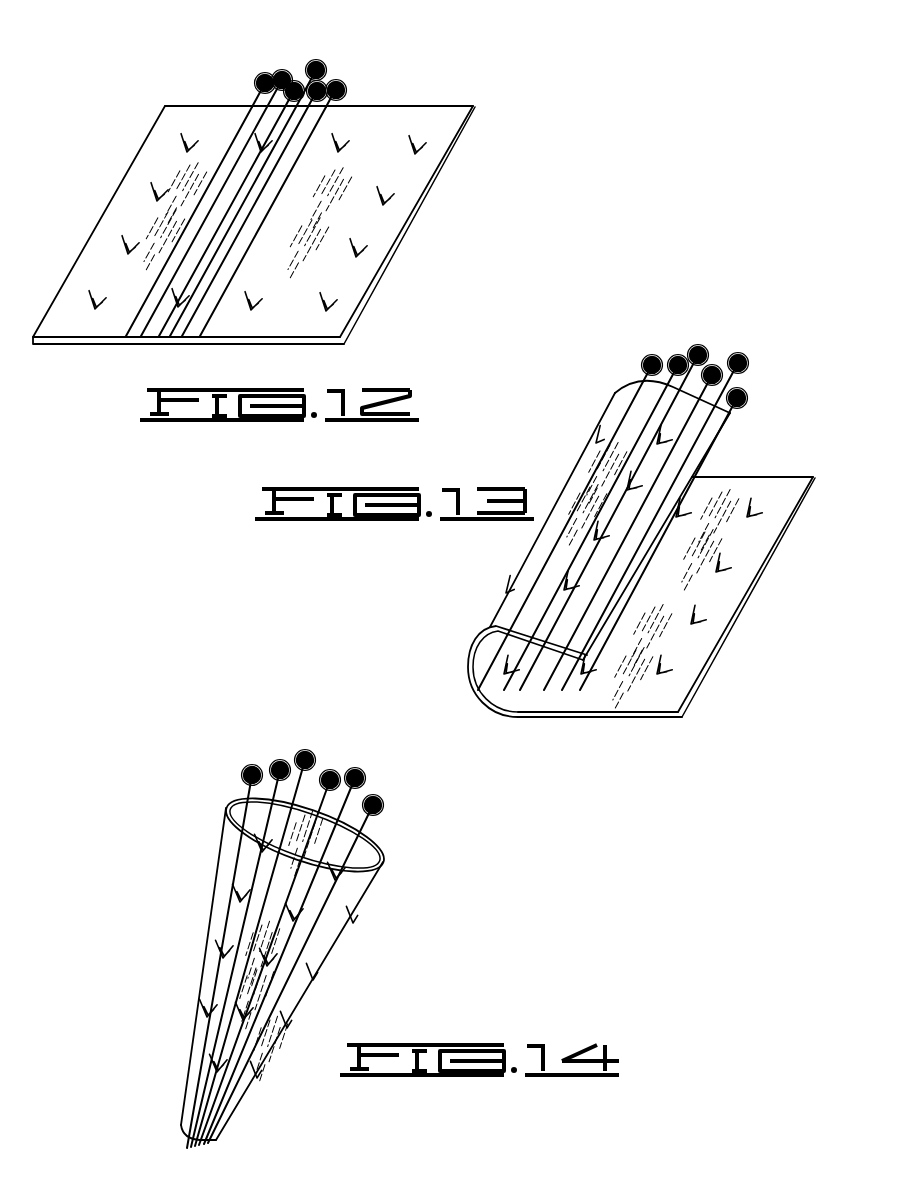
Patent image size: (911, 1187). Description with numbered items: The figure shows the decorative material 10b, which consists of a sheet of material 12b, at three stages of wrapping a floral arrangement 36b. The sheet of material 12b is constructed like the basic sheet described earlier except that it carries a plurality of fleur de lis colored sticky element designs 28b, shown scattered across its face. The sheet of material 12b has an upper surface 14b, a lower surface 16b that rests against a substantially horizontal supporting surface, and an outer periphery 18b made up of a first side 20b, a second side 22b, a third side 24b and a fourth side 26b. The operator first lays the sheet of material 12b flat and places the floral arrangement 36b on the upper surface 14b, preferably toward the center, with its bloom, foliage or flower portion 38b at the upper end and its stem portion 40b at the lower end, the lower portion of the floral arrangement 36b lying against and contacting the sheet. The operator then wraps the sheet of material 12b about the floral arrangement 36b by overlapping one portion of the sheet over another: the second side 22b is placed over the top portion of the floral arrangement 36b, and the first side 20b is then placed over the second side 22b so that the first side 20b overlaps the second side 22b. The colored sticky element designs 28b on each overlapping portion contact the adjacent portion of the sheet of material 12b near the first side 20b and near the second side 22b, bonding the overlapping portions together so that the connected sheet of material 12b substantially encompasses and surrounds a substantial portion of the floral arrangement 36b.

In FIG. 12, the decorative material 10b is at (224, 72).
In FIG. 13, the decorative material 10b is at (620, 360).
In FIG. 14, the decorative material 10b is at (242, 745).
In FIG. 12, the sheet of material 12b is at (201, 101).
In FIG. 13, the sheet of material 12b is at (764, 472).
In FIG. 14, the sheet of material 12b is at (392, 868).
In FIG. 12, the upper surface 14b is at (421, 168).
In FIG. 13, the upper surface 14b is at (770, 530).
In FIG. 14, the upper surface 14b is at (340, 848).
In FIG. 13, the lower surface 16b is at (530, 568).
In FIG. 14, the lower surface 16b is at (237, 875).
In FIG. 12, the outer periphery 18b is at (385, 272).
In FIG. 13, the outer periphery 18b is at (710, 667).
In FIG. 14, the outer periphery 18b is at (240, 925).
In FIG. 12, the first side 20b is at (413, 217).
In FIG. 13, the first side 20b is at (752, 598).
In FIG. 14, the first side 20b is at (225, 983).
In FIG. 12, the second side 22b is at (122, 178).
In FIG. 13, the second side 22b is at (653, 547).
In FIG. 14, the second side 22b is at (255, 990).
In FIG. 12, the third side 24b is at (382, 106).
In FIG. 13, the third side 24b is at (627, 383).
In FIG. 14, the third side 24b is at (243, 808).
In FIG. 12, the fourth side 26b is at (92, 345).
In FIG. 13, the fourth side 26b is at (580, 718).
In FIG. 14, the fourth side 26b is at (180, 1128).
In FIG. 12, the colored sticky element designs 28b is at (412, 138).
In FIG. 13, the colored sticky element designs 28b is at (752, 501).
In FIG. 14, the colored sticky element designs 28b is at (285, 910).
In FIG. 12, the floral arrangement 36b is at (259, 68).
In FIG. 13, the floral arrangement 36b is at (694, 342).
In FIG. 14, the floral arrangement 36b is at (297, 737).
In FIG. 12, the bloom, foliage or flower portion 38b is at (331, 64).
In FIG. 13, the bloom, foliage or flower portion 38b is at (746, 358).
In FIG. 14, the bloom, foliage or flower portion 38b is at (367, 778).
In FIG. 12, the stem portion 40b is at (122, 338).
In FIG. 13, the stem portion 40b is at (466, 662).
In FIG. 14, the stem portion 40b is at (205, 1140).